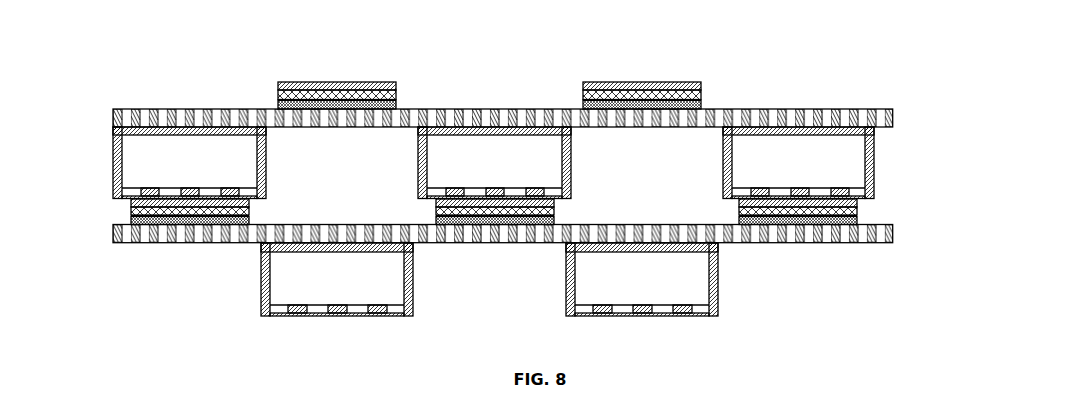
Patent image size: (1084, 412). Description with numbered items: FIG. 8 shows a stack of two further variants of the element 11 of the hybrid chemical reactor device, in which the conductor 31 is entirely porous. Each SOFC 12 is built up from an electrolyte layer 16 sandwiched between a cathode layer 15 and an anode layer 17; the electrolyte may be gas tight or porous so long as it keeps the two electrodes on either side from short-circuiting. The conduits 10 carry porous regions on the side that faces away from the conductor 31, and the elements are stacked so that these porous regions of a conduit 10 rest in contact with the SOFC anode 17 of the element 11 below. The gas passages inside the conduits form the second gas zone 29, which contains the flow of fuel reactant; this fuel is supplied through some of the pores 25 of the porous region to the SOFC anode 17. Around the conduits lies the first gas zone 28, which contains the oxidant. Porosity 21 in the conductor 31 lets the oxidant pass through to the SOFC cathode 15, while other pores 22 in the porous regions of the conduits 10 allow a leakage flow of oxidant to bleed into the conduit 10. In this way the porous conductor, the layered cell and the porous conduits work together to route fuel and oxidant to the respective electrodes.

The conduit 10 is at (117, 142).
The element 11 is at (123, 60).
The SOFC 12 is at (284, 64).
The cathode layer 15 is at (282, 103).
The electrolyte layer 16 is at (285, 93).
The anode layer 17 is at (303, 83).
The porosity 21 is at (450, 227).
The pores 22 is at (858, 197).
The pores 25 is at (168, 192).
The first gas zone 28 is at (338, 172).
The second gas zone 29 is at (180, 172).
The conductor 31 is at (890, 118).